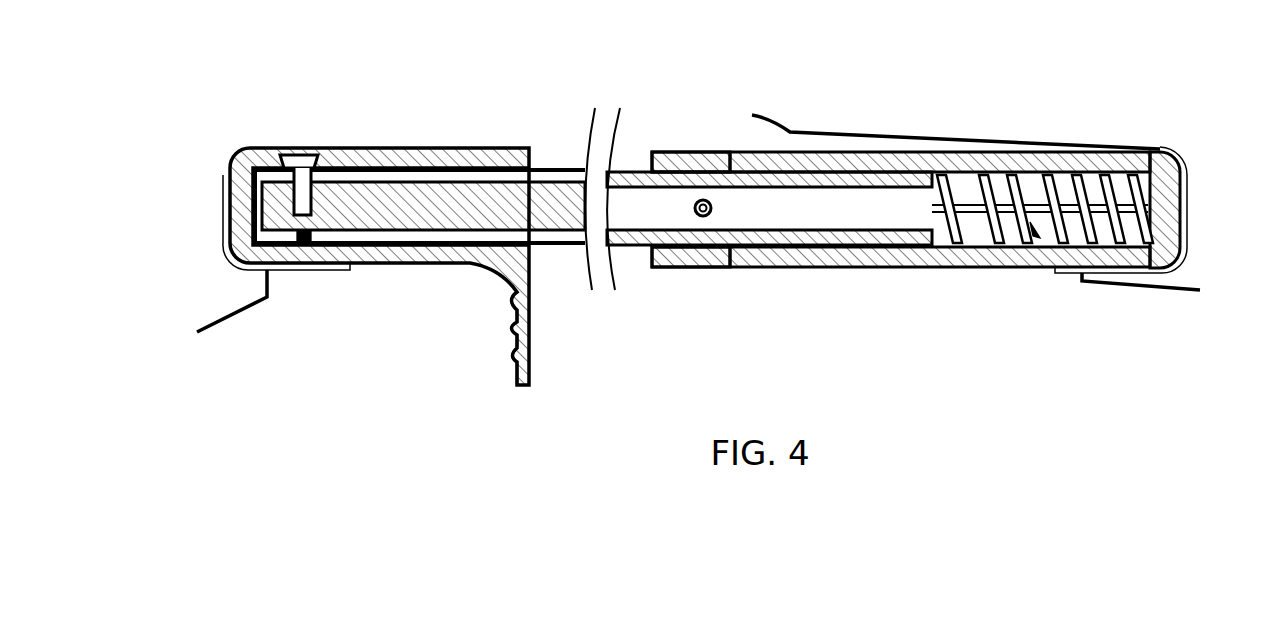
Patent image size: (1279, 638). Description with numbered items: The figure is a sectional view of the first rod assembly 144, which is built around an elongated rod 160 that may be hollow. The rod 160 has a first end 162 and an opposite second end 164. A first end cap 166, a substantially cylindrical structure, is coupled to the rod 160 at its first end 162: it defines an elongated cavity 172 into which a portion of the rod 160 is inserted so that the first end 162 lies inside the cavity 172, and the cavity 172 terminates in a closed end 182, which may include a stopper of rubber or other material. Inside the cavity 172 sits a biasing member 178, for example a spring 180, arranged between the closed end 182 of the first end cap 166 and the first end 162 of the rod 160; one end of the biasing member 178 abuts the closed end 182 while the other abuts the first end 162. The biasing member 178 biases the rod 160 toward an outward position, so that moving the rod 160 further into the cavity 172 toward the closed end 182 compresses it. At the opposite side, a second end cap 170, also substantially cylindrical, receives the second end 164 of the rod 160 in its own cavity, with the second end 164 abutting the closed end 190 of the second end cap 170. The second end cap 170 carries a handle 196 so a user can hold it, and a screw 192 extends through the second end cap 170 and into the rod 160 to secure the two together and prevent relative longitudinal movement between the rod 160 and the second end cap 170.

The first rod assembly 144 is at (736, 278).
The elongated rod 160 is at (672, 153).
The first end 162 is at (932, 150).
The second end 164 is at (233, 238).
The first end cap 166 is at (967, 268).
The second end cap 170 is at (385, 256).
The elongated cavity 172 is at (1042, 268).
The biasing member 178 is at (1043, 146).
The spring 180 is at (995, 147).
The closed end 182 is at (1190, 205).
The closed end 190 is at (238, 200).
The screw 192 is at (293, 150).
The handle 196 is at (512, 327).